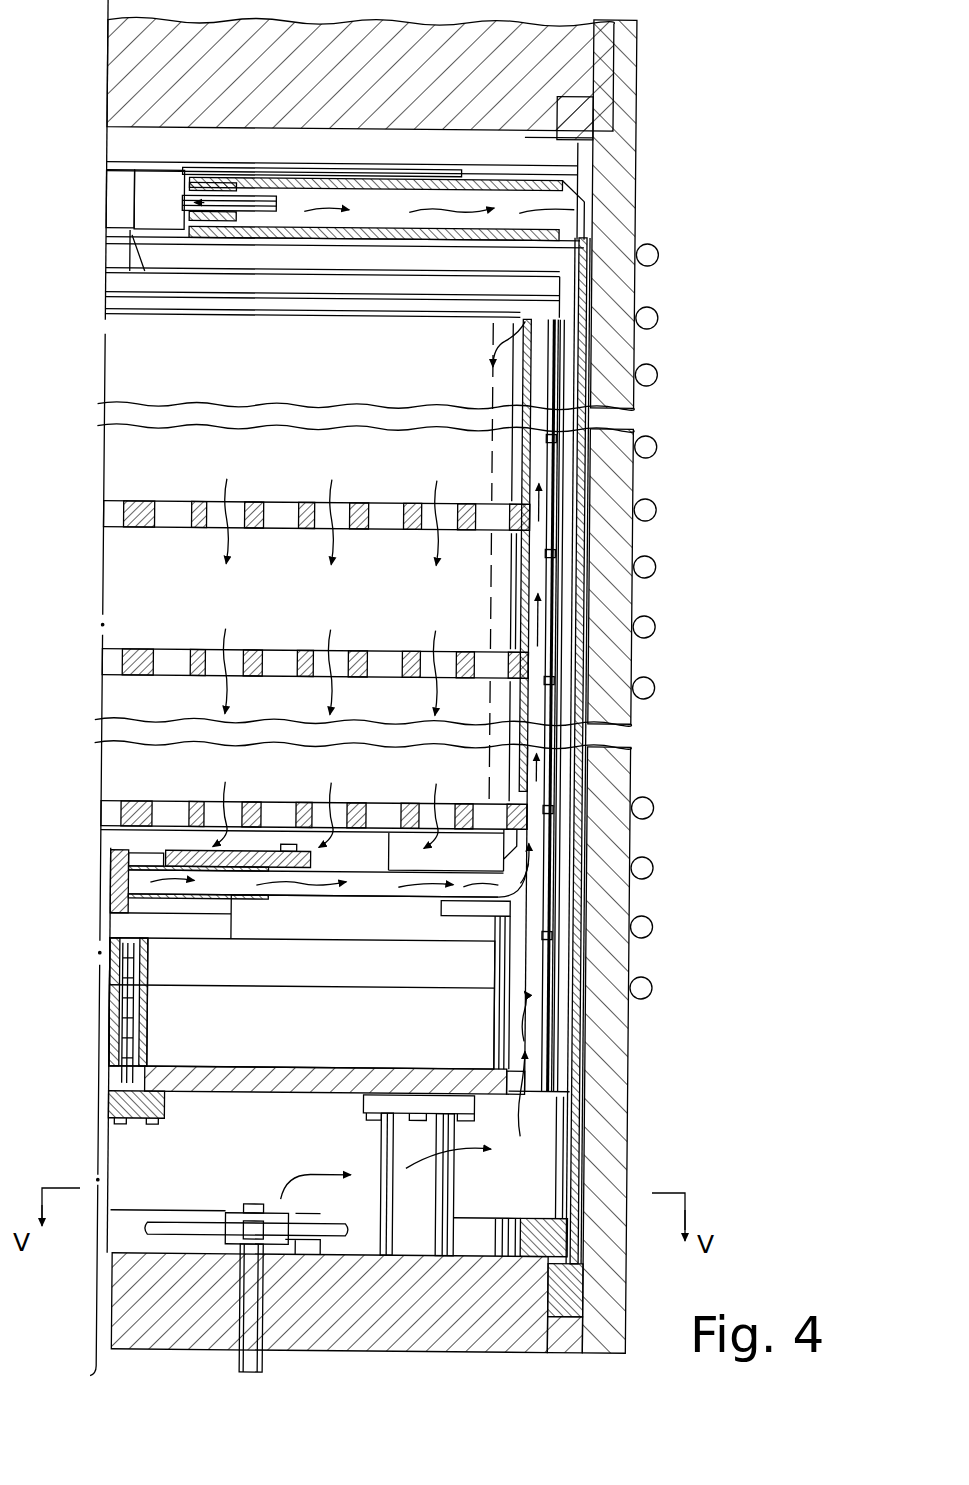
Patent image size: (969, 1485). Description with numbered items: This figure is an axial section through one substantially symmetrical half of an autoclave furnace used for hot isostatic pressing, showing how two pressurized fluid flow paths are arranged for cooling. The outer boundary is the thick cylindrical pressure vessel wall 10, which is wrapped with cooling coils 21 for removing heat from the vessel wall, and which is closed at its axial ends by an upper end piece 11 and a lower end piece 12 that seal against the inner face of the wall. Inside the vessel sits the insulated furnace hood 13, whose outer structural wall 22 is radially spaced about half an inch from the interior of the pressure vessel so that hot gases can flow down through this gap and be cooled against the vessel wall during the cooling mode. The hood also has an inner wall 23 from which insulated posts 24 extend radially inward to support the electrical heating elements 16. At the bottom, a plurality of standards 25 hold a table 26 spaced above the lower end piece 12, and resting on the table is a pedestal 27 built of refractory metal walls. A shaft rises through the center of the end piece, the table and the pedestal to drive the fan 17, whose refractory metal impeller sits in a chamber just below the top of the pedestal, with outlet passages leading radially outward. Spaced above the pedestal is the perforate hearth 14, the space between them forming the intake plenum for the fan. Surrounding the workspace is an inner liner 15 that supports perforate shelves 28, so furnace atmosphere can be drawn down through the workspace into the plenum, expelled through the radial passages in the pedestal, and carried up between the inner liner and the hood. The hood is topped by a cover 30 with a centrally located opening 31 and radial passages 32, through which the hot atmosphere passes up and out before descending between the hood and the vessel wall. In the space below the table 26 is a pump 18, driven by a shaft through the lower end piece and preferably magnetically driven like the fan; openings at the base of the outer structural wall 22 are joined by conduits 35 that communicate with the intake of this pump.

The pressure vessel 10 is at (623, 199).
The upper end piece 11 is at (565, 62).
The lower end piece 12 is at (401, 1312).
The furnace hood 13 is at (580, 772).
The furnace hearth 14 is at (202, 800).
The inner liner 15 is at (522, 594).
The electrical heating elements 16 is at (547, 773).
The fan 17 is at (112, 880).
The pump 18 is at (226, 1210).
The cooling coils 21 is at (660, 628).
The outer structural wall 22 is at (582, 958).
The inner wall 23 is at (557, 1061).
The insulated posts 24 is at (548, 552).
The standards 25 is at (433, 1198).
The table 26 is at (248, 1082).
The pedestal 27 is at (334, 979).
The perforate shelves 28 is at (148, 502).
The cover 30 is at (392, 179).
The centrally located opening 31 is at (110, 192).
The radial passages 32 is at (387, 221).
The conduits 35 is at (194, 1222).